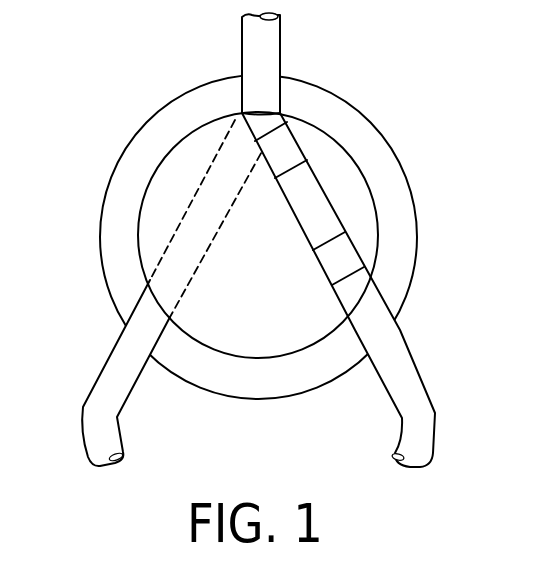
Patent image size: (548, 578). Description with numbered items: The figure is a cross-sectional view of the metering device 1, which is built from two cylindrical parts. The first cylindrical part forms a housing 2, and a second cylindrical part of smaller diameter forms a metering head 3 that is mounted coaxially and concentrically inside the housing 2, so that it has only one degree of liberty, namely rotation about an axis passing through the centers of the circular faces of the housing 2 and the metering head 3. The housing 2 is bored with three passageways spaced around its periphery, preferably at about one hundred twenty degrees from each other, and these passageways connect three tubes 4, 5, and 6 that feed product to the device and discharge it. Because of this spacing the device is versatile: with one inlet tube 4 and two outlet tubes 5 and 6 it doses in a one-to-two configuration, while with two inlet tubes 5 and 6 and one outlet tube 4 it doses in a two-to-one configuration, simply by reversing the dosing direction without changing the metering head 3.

The metering device 1 is at (266, 240).
The housing 2 is at (418, 221).
The metering head 3 is at (144, 195).
The tube 4 is at (242, 37).
The tube 5 is at (111, 353).
The tube 6 is at (405, 350).